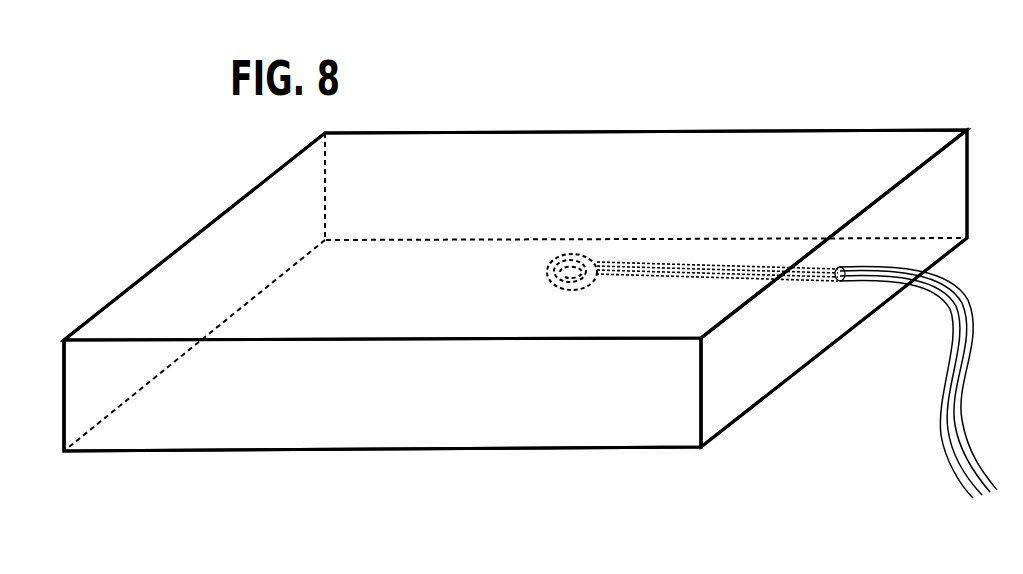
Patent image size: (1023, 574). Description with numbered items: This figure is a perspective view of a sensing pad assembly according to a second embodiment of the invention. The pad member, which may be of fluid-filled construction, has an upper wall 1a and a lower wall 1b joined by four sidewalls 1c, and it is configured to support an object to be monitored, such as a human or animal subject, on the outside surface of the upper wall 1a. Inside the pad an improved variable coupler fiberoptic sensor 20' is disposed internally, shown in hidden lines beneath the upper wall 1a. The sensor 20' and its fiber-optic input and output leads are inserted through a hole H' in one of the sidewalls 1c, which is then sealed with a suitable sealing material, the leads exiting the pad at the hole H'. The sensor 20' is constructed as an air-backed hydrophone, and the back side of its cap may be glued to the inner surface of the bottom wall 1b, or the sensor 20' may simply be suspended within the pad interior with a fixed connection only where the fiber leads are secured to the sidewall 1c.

The upper wall 1a is at (278, 196).
The lower wall 1b is at (452, 429).
The sidewalls 1c is at (148, 350).
The variable coupler fiberoptic sensor 20' is at (678, 384).
The hole H' is at (916, 382).